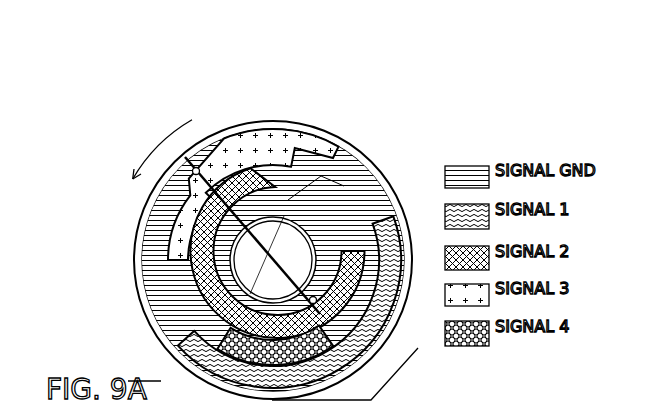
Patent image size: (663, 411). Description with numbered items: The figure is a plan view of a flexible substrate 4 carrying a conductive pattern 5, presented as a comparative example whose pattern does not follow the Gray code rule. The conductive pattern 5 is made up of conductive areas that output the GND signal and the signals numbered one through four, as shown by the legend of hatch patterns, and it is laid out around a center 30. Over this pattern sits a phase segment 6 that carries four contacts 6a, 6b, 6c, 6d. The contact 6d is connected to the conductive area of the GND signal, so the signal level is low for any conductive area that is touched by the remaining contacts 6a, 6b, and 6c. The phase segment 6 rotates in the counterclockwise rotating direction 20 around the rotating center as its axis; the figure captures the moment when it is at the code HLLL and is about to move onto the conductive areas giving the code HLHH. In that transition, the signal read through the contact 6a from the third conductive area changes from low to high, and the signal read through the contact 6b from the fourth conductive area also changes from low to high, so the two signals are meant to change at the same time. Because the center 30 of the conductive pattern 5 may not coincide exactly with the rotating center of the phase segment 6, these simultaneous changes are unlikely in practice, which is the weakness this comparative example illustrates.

The flexible substrate 4 is at (276, 238).
The conductive pattern 5 is at (317, 112).
The phase segment 6 is at (336, 177).
The contact 6a is at (198, 148).
The contact 6b is at (380, 336).
The contact 6c is at (158, 216).
The contact 6d is at (382, 250).
The rotating direction 20 is at (150, 136).
The center of the conductive pattern 30 is at (150, 284).